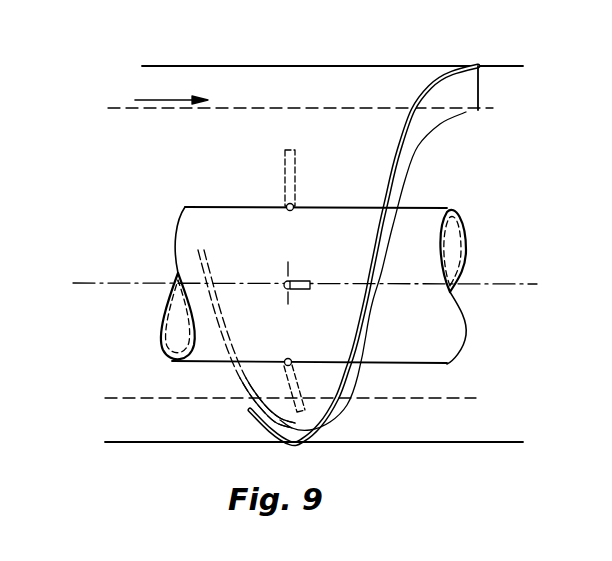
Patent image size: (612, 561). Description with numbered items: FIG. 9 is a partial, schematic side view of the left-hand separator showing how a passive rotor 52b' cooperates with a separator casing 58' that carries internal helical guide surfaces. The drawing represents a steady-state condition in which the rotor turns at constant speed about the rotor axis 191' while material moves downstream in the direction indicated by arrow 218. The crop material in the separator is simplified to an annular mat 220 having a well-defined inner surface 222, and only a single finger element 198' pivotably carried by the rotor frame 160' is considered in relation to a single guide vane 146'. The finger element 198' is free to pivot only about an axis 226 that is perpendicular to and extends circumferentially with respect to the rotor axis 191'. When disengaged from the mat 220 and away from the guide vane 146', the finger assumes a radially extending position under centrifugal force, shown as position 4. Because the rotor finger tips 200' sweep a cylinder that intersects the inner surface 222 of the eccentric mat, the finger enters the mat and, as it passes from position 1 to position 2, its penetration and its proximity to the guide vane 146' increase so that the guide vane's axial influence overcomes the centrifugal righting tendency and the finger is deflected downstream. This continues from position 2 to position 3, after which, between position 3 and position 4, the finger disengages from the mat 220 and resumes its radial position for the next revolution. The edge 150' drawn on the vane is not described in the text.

The separator casing 58' is at (332, 45).
The arrow 218 is at (160, 102).
The guide vane 146' is at (364, 255).
The helical blade 150' is at (358, 270).
The rotor frame 160' is at (306, 267).
The passive rotor 52b' is at (108, 212).
The rotor axis 191' is at (301, 263).
The position 4 is at (289, 166).
The rotor finger tips 200' is at (247, 147).
The finger element 198' is at (255, 177).
The pivot axis 226 is at (288, 292).
The position 1 is at (271, 267).
The position 3 is at (310, 281).
The position 2 is at (285, 386).
The inner surface of the mat 222 is at (208, 392).
The annular mat 220 is at (213, 432).